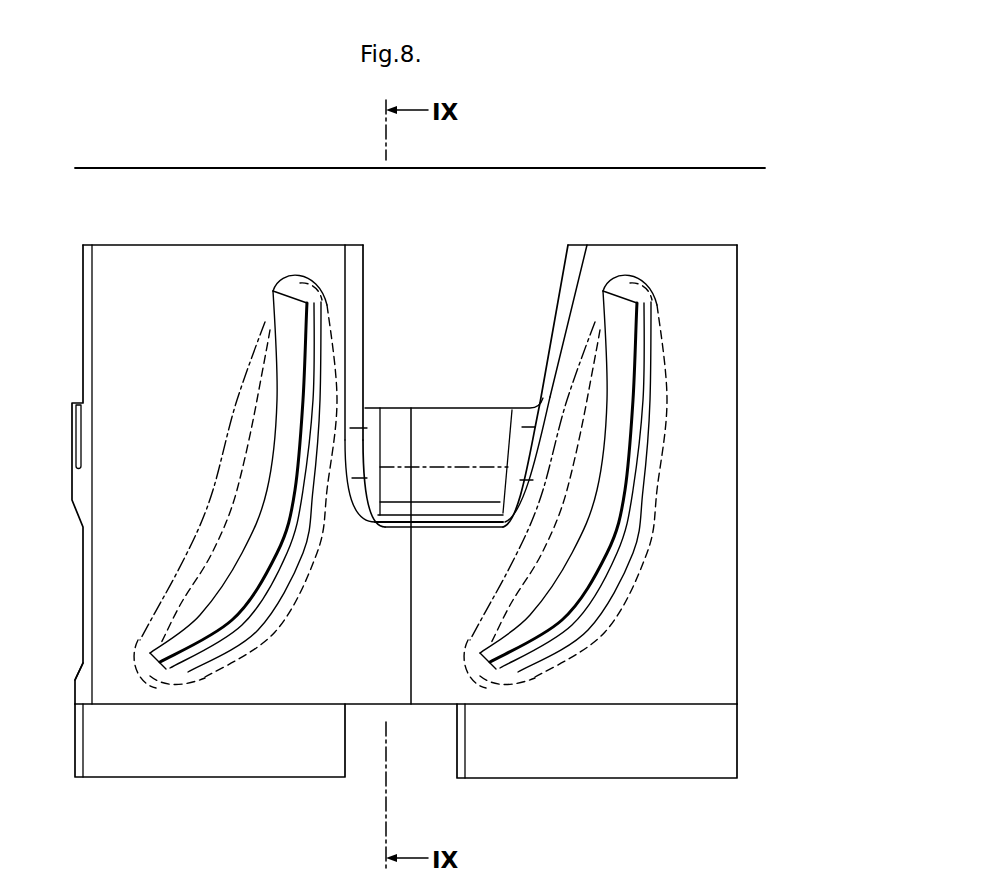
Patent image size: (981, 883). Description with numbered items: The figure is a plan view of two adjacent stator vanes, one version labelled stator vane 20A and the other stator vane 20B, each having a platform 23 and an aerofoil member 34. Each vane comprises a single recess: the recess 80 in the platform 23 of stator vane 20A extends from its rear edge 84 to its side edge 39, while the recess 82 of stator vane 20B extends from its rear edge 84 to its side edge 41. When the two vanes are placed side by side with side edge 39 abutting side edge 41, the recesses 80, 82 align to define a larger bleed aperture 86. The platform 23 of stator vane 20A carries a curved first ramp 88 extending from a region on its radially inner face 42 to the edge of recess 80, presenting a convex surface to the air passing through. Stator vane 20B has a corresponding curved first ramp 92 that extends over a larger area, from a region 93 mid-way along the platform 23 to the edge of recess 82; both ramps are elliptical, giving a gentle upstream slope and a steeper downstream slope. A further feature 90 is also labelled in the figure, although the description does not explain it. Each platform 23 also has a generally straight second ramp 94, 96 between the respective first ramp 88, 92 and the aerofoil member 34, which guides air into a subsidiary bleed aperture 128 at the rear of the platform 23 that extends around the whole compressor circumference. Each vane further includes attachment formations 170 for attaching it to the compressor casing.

The subsidiary bleed aperture 128 is at (518, 192).
The stator vane 20A is at (128, 590).
The stator vane 20B is at (716, 677).
The platform 23 is at (148, 440).
The aerofoil member 34 is at (264, 324).
The side edge 39 is at (737, 408).
The side edge 41 is at (83, 312).
The radially inner face 42 is at (105, 648).
The recess 80 is at (363, 287).
The recess 82 is at (553, 313).
The rear edge 84 is at (172, 244).
The bleed aperture 86 is at (461, 286).
The first ramp 88 is at (391, 428).
The channel corner 90 is at (382, 530).
The first ramp 92 is at (488, 428).
The region 93 is at (456, 530).
The second ramp 94 is at (353, 252).
The second ramp 96 is at (577, 265).
The attachment formations 170 is at (74, 403).